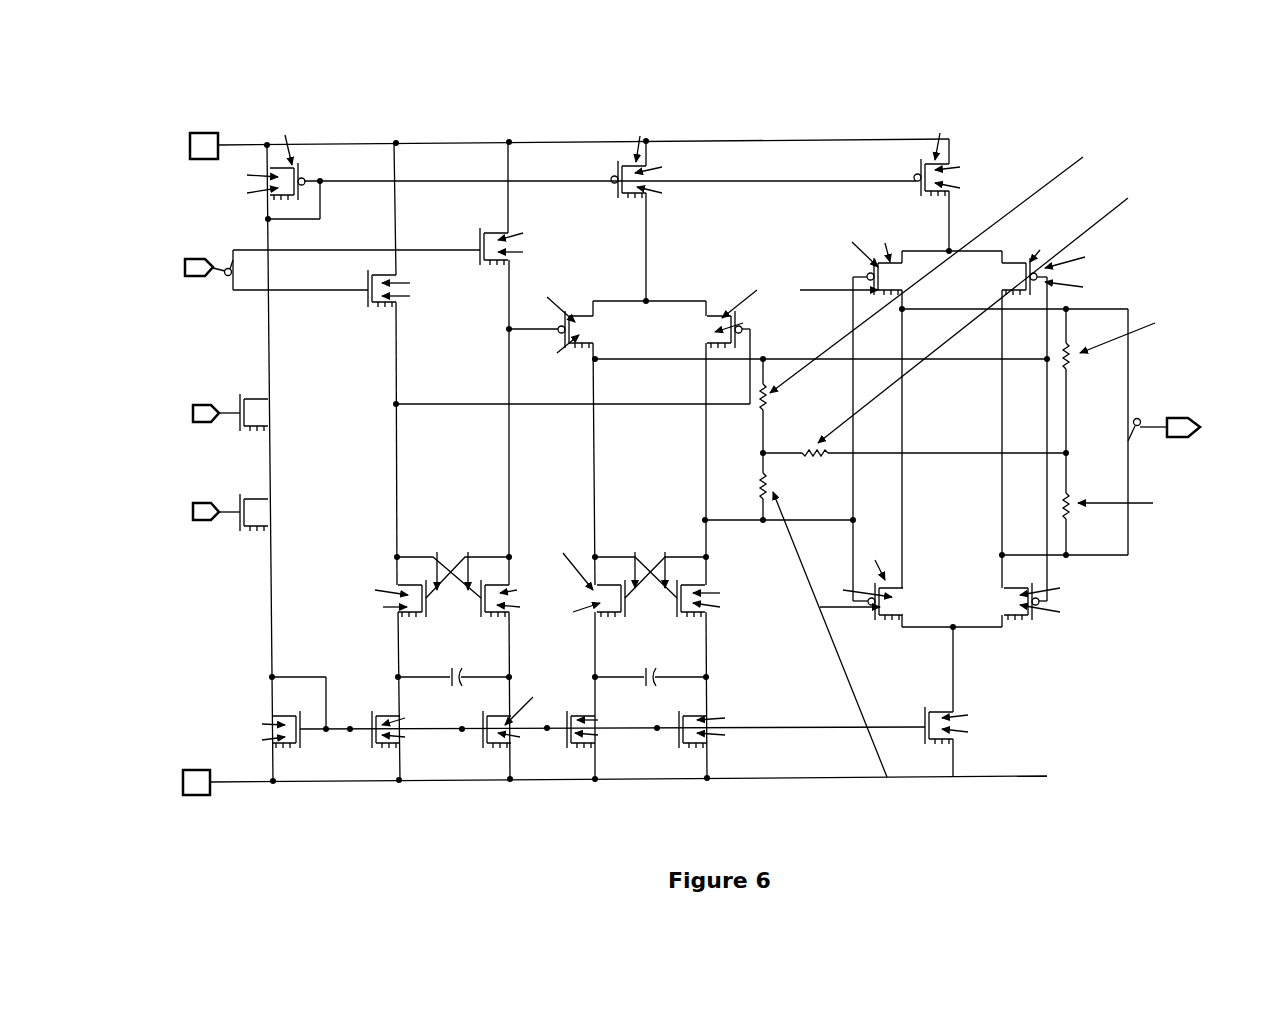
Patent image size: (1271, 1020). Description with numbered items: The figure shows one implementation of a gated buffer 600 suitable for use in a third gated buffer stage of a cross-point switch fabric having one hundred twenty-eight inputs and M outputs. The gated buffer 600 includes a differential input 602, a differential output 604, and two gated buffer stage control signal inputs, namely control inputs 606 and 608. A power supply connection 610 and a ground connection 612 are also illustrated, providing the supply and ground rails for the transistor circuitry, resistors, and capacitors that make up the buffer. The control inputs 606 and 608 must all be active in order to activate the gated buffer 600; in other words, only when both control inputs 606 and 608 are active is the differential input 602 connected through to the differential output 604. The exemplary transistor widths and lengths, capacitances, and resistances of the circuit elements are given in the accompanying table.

The gated buffer 600 is at (1158, 110).
The differential input 602 is at (213, 258).
The differential output 604 is at (1152, 418).
The gated buffer stage control signal input 606 is at (188, 402).
The gated buffer stage control signal input 608 is at (188, 502).
The power supply connection 610 is at (238, 142).
The ground connection 612 is at (227, 785).